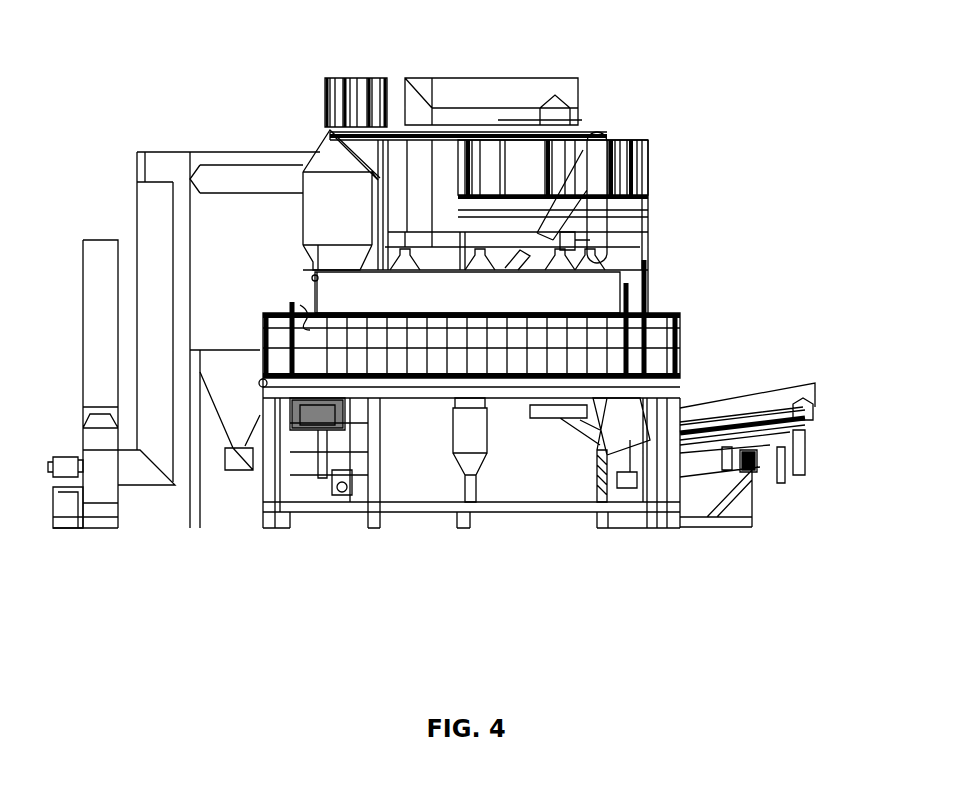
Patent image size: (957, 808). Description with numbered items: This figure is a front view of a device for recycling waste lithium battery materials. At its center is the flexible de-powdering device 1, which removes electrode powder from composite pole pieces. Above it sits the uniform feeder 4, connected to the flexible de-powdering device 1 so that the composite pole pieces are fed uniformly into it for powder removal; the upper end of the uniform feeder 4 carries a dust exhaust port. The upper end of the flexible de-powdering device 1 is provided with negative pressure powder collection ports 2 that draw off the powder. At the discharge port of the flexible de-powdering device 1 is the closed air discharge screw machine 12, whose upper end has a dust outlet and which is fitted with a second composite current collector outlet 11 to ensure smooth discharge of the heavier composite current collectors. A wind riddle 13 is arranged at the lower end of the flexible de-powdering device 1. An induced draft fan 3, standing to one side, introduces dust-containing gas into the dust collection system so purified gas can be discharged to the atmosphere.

The flexible de-powdering device 1 is at (565, 295).
The negative pressure powder collection port 2 is at (575, 245).
The induced draft fan 3 is at (102, 462).
The uniform feeder 4 is at (340, 192).
The second composite current collector outlet 11 is at (805, 420).
The closed air discharge screw machine 12 is at (627, 442).
The wind riddle 13 is at (467, 438).